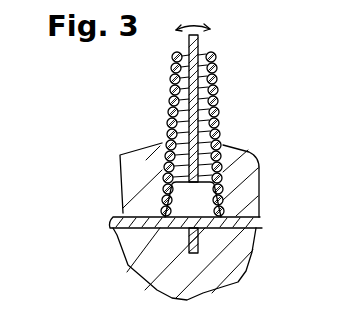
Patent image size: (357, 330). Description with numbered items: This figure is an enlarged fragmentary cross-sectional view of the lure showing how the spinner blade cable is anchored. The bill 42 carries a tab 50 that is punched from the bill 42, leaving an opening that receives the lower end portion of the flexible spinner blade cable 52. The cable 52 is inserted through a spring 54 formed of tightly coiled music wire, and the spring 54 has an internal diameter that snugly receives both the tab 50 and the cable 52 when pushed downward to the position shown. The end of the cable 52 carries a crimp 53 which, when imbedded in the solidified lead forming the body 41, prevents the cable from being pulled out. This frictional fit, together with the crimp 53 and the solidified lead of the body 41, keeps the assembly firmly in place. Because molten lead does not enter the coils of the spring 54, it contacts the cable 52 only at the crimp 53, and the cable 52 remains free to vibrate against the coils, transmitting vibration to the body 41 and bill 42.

The body 41 is at (170, 267).
The bill 42 is at (123, 224).
The tab 50 is at (186, 197).
The flexible spinner blade cable 52 is at (199, 37).
The crimp 53 is at (199, 247).
The spring 54 is at (216, 99).